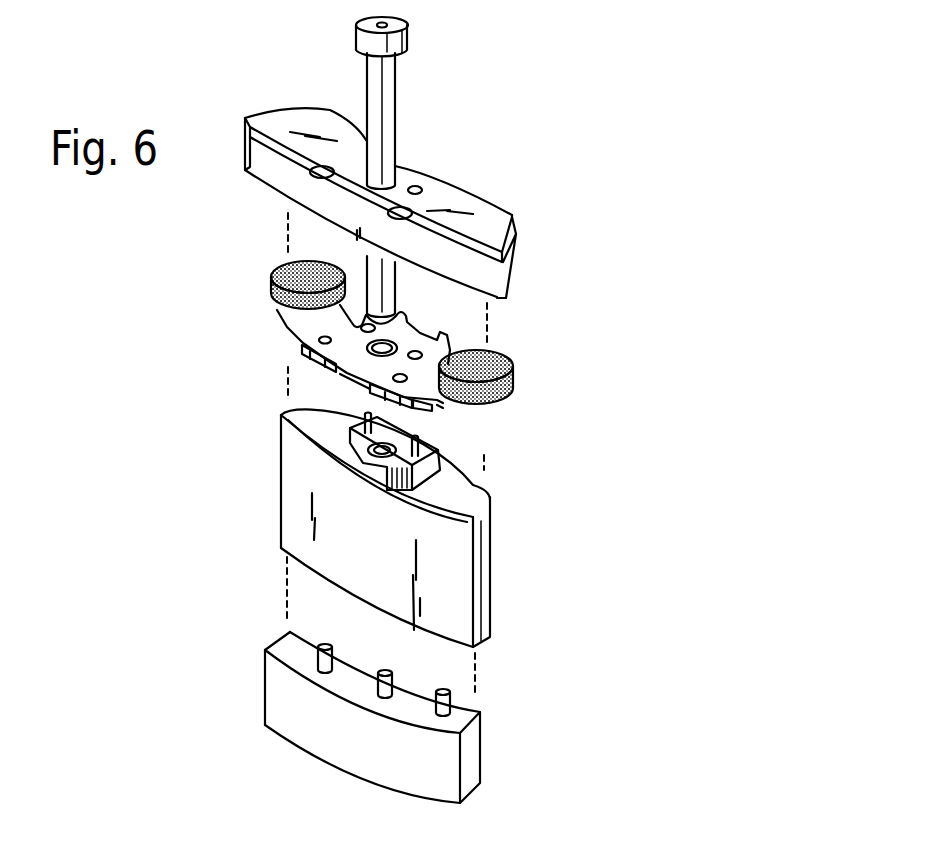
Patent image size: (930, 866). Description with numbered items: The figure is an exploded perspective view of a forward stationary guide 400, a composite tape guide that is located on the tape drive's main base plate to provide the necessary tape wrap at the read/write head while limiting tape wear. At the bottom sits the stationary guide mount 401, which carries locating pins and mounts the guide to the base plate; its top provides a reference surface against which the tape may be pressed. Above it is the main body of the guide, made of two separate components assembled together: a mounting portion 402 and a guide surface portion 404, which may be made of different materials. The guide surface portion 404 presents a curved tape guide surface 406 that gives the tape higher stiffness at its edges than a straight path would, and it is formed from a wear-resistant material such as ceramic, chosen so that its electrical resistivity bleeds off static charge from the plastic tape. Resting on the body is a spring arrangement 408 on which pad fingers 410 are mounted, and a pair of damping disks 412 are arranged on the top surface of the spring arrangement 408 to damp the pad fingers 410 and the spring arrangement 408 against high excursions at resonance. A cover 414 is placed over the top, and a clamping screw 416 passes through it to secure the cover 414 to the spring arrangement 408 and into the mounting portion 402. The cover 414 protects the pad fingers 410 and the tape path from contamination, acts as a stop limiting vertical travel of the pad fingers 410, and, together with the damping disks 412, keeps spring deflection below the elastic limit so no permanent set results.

The stationary guide 400 is at (545, 631).
The stationary guide mount 401 is at (448, 753).
The mounting portion 402 is at (370, 528).
The guide surface portion 404 is at (280, 550).
The tape guide surface 406 is at (455, 580).
The spring arrangement 408 is at (294, 385).
The pad fingers 410 is at (300, 348).
The damping disks 412 is at (280, 266).
The cover 414 is at (515, 247).
The clamping screw 416 is at (397, 103).